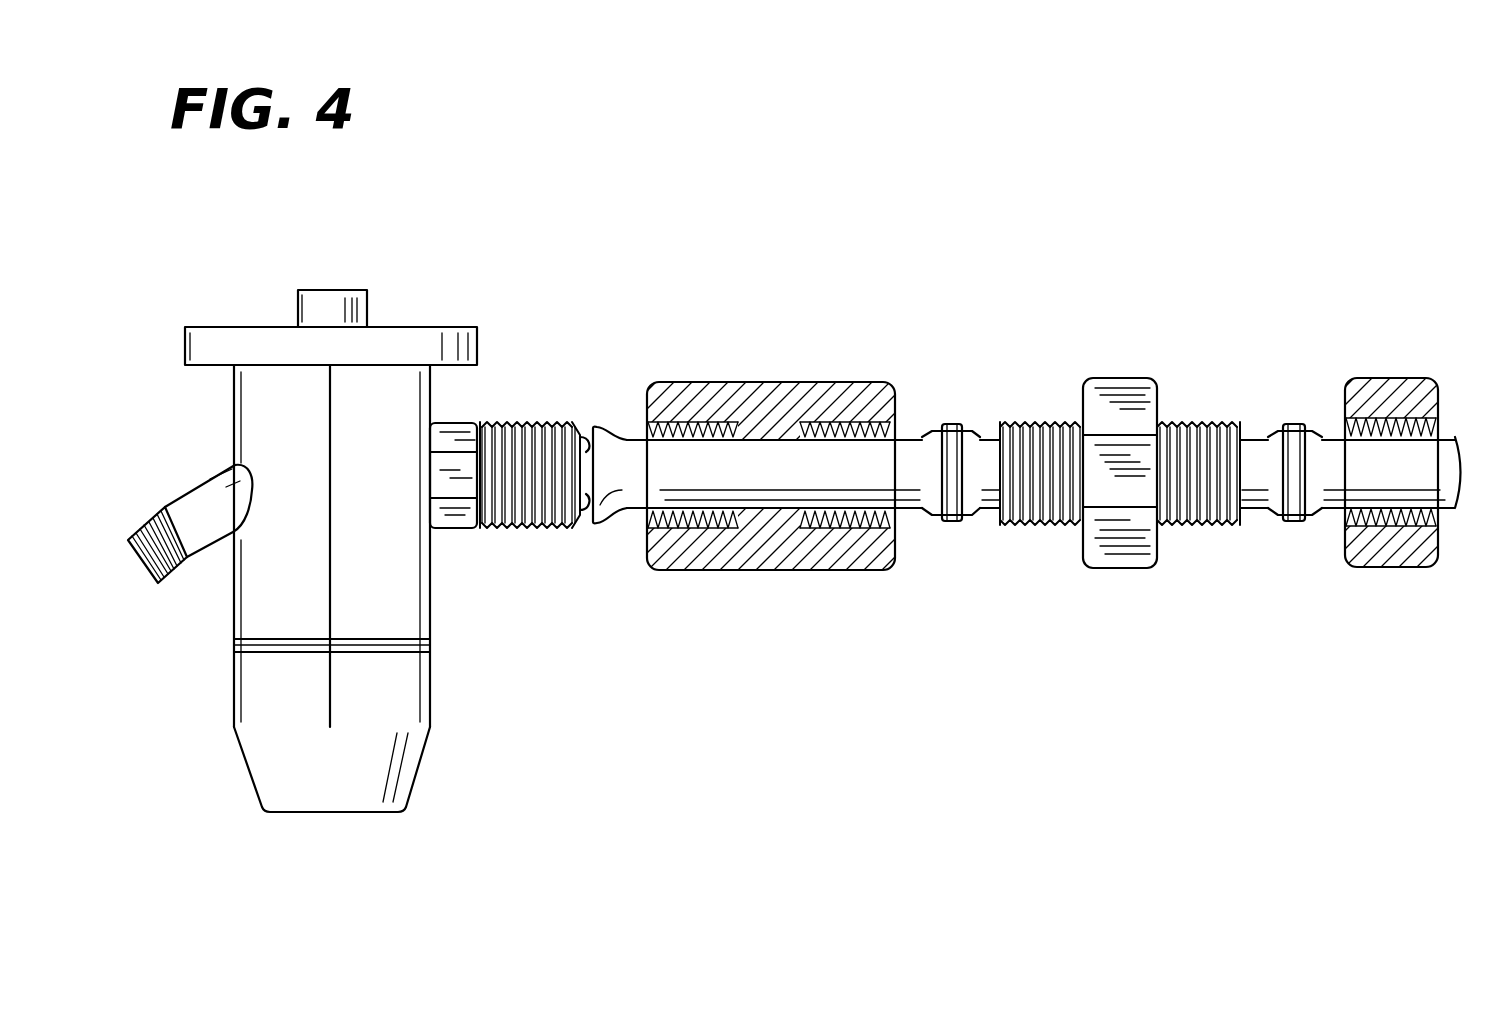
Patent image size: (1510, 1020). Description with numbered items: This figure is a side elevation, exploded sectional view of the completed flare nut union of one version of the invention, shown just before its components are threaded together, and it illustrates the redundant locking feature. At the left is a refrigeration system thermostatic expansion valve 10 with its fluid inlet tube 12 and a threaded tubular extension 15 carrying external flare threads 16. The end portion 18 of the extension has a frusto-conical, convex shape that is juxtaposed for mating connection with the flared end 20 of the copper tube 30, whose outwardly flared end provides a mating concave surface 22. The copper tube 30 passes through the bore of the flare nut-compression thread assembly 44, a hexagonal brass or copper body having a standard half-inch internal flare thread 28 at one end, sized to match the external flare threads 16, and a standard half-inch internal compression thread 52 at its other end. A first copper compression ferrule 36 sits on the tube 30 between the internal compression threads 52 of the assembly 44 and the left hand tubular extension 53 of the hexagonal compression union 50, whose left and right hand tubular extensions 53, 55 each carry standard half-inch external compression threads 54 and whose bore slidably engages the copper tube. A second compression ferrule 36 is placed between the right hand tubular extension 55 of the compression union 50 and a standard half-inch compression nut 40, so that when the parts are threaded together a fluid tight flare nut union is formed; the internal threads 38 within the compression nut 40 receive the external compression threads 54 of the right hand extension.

The thermostatic expansion valve 10 is at (217, 323).
The fluid inlet tube 12 is at (159, 590).
The threaded tubular extension 15 is at (500, 419).
The external flare threads 16 is at (503, 532).
The end portion 18 is at (583, 446).
The flared end 20 is at (606, 422).
The concave surface 22 is at (587, 520).
The internal flare thread 28 is at (713, 522).
The copper tube 30 is at (903, 436).
The compression ferrule 36 is at (952, 422).
The internal threads 38 is at (1390, 520).
The compression nut 40 is at (1383, 375).
The flare nut-compression thread assembly 44 is at (754, 377).
The compression union 50 is at (1120, 573).
The internal compression thread 52 is at (831, 426).
The left hand tubular extension 53 is at (1037, 527).
The external compression threads 54 is at (1027, 425).
The right hand tubular extension 55 is at (1195, 525).